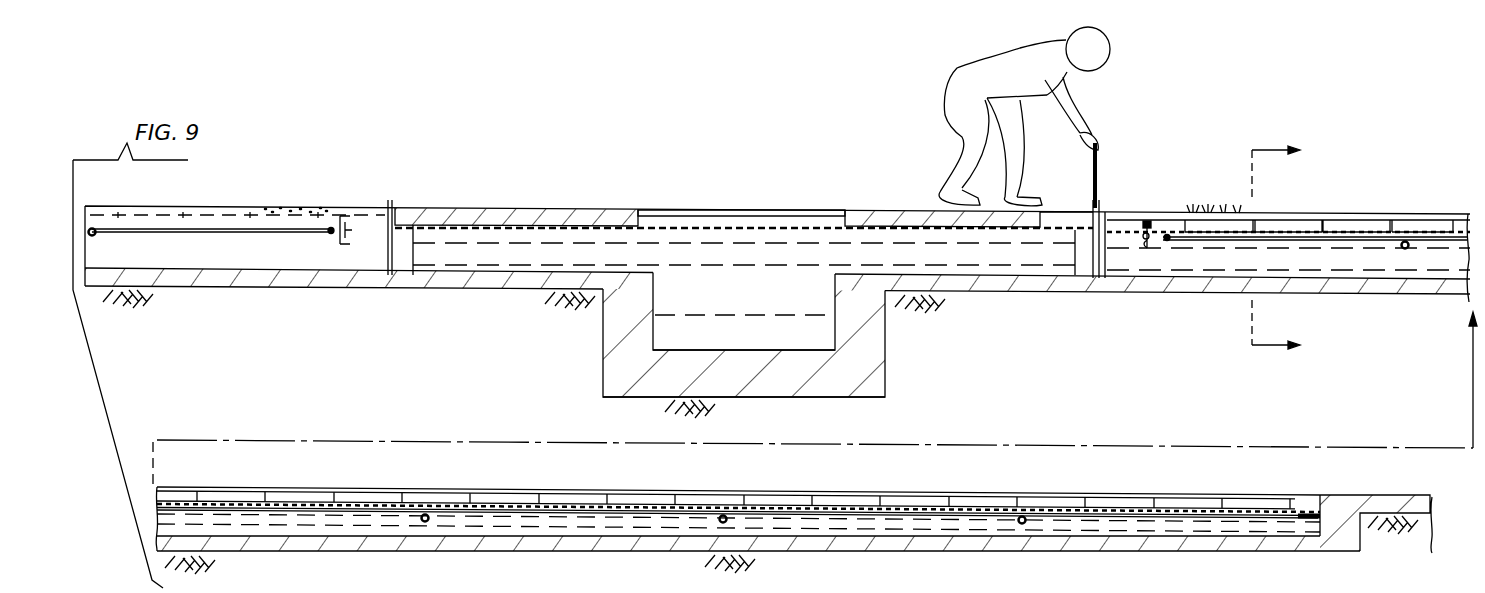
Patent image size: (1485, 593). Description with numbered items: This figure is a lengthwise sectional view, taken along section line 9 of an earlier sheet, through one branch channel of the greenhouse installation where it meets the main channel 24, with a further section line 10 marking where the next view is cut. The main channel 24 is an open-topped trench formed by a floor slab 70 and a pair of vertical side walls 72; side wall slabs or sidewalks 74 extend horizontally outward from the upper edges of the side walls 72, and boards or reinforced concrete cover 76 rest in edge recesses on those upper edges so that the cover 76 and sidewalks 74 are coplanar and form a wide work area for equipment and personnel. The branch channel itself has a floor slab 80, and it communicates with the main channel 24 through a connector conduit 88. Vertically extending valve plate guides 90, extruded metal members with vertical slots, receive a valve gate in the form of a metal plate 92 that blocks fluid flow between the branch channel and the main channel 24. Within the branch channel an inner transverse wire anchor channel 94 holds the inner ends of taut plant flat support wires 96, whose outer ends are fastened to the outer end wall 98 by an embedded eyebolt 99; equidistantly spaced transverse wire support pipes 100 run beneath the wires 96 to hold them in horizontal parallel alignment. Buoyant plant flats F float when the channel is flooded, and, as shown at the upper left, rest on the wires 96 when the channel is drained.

The section line 9— 9 is at (1100, 172).
The section line 10— 10 is at (1292, 247).
The main channel 24 is at (755, 297).
The floor slab 70 is at (705, 364).
The vertical side wall 72 is at (660, 318).
The side wall slab (sidewalk) 74 is at (510, 210).
The boards (reinforced concrete cover) 76 is at (751, 210).
The floor slab 80 is at (1125, 282).
The connector conduit 88 is at (458, 242).
The valve plate guide 90 is at (386, 245).
The valve gate (metal plate) 92 is at (397, 212).
The wire anchor channel 94 is at (334, 220).
The plant flat support wire 96 is at (233, 233).
The outer end wall 98 is at (1330, 498).
The eyebolt 99 is at (1308, 514).
The wire support pipe 100 is at (94, 236).
The plant flat F is at (272, 226).